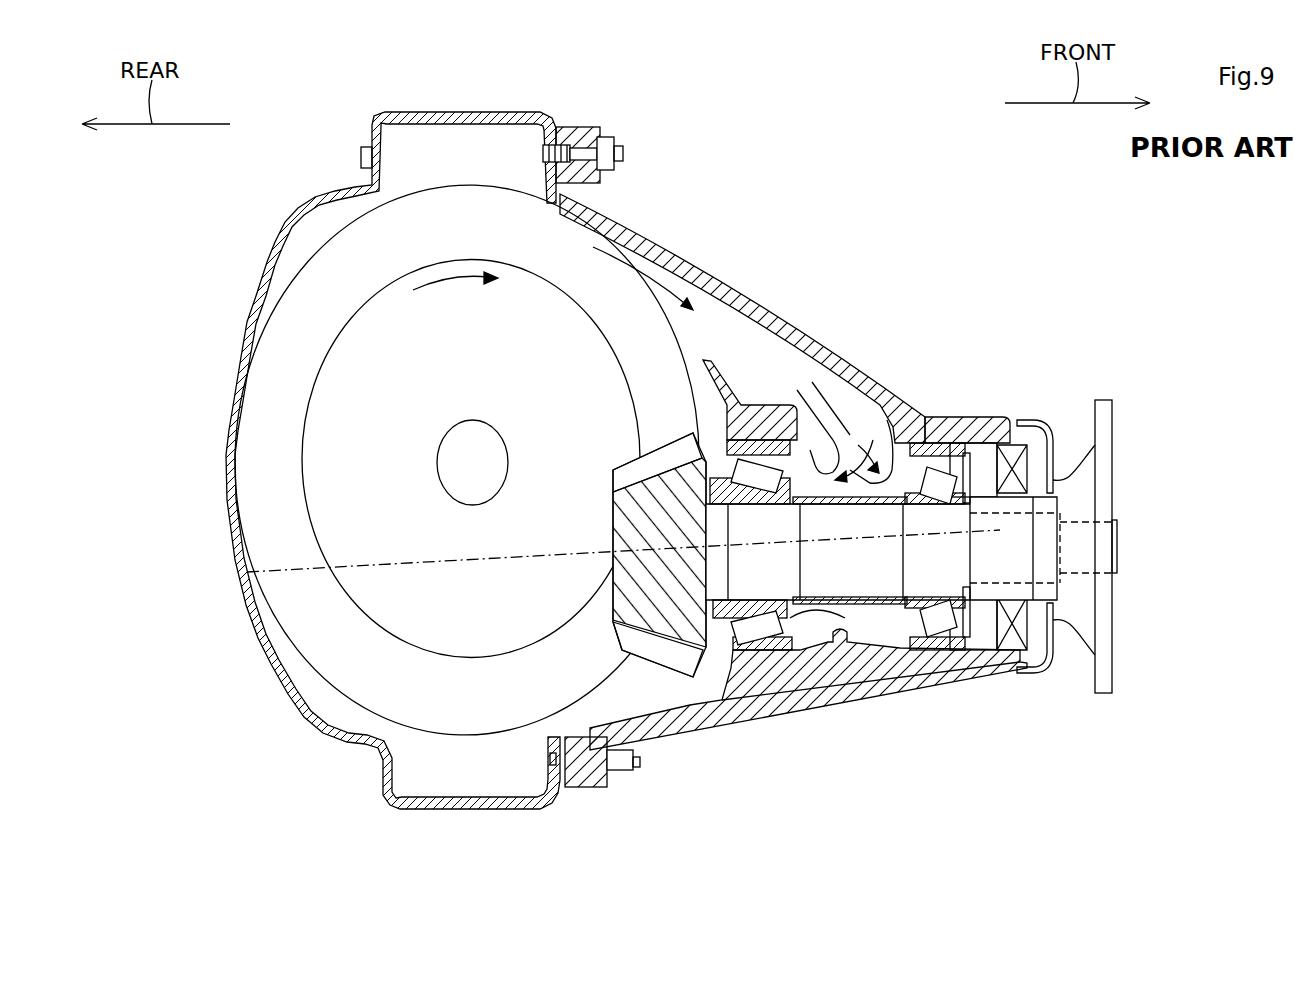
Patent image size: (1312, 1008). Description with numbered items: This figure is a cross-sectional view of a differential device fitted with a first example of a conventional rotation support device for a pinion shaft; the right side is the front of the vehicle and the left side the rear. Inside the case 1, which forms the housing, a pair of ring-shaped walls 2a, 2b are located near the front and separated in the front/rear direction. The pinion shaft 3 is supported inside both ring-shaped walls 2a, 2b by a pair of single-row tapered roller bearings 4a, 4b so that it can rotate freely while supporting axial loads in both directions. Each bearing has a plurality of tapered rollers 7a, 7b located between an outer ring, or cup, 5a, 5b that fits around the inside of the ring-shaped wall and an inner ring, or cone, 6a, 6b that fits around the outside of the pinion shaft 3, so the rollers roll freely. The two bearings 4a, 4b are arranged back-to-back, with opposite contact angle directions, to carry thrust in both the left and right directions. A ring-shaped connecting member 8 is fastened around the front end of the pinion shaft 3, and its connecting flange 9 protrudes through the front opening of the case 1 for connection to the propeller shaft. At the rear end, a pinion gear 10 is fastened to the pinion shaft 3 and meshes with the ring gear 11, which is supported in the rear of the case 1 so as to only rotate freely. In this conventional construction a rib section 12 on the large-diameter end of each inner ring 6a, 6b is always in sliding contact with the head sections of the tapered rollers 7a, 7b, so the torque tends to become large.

The case 1 is at (665, 243).
The ring-shaped wall 2a is at (772, 428).
The ring-shaped wall 2b is at (960, 418).
The pinion shaft 3 is at (853, 580).
The single-row tapered roller bearing 4a is at (762, 636).
The single-row tapered roller bearing 4b is at (935, 630).
The outer ring (cup) 5a is at (752, 400).
The outer ring (cup) 5b is at (925, 414).
The inner ring (cone) 6a is at (753, 467).
The inner ring (cone) 6b is at (943, 485).
The tapered rollers 7a is at (803, 437).
The tapered rollers 7b is at (945, 415).
The connecting member 8 is at (1075, 490).
The connecting flange 9 is at (1102, 417).
The pinion gear 10 is at (655, 650).
The ring gear 11 is at (490, 703).
The rib section 12 is at (725, 660).